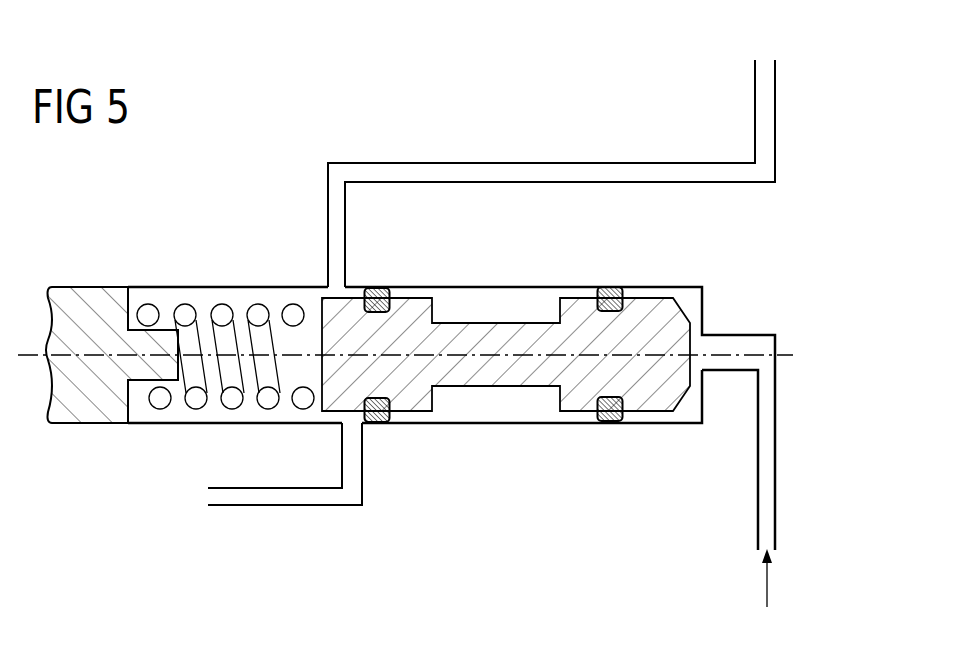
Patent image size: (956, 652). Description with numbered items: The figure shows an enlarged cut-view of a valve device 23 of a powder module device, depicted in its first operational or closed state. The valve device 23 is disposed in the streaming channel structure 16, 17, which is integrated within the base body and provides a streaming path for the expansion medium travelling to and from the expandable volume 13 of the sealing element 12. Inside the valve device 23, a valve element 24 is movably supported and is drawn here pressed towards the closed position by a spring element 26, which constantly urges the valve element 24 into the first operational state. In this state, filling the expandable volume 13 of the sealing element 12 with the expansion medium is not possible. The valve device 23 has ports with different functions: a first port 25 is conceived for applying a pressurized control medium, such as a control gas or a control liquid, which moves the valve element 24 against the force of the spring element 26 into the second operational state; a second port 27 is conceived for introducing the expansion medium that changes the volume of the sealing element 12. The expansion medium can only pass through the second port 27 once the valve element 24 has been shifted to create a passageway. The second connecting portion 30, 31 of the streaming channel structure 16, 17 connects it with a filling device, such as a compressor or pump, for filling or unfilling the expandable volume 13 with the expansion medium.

The sealing element 12 is at (241, 480).
The expandable volume 13 is at (213, 497).
The streaming channel structure 16 is at (506, 383).
The streaming channel structure 17 is at (506, 383).
The valve device 23 is at (614, 277).
The valve element 24 is at (577, 398).
The first port 25 is at (708, 322).
The spring element 26 is at (180, 298).
The second port 27 is at (348, 287).
The second connecting portion 30 is at (590, 144).
The second connecting portion 31 is at (551, 173).